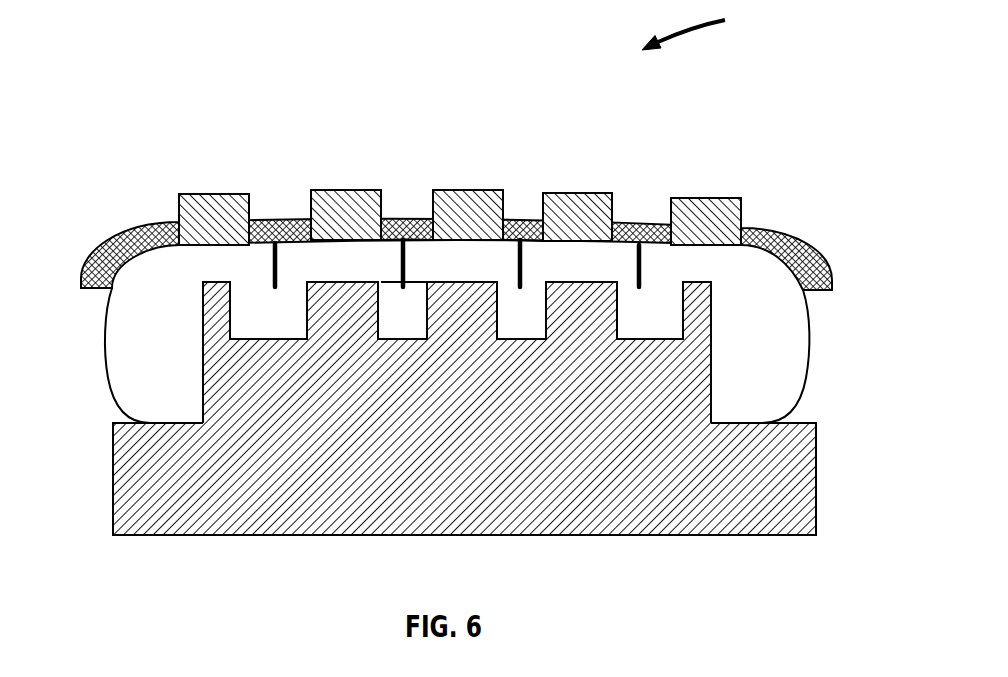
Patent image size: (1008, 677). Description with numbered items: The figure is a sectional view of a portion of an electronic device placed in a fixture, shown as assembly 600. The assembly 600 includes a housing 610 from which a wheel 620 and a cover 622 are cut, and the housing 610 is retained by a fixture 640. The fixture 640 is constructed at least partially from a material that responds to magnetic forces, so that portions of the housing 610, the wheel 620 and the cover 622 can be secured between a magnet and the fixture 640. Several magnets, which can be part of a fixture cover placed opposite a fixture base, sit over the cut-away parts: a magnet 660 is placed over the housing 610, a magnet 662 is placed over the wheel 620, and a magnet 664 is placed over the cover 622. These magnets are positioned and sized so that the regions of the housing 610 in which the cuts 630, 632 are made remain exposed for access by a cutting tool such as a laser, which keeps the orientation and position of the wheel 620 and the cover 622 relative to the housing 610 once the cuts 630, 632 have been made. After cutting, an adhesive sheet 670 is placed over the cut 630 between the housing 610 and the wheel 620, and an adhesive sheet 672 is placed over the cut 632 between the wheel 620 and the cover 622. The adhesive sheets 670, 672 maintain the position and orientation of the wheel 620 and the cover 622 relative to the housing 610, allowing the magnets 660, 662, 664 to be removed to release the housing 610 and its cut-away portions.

The assembly 600 is at (711, 28).
The housing 610 is at (115, 368).
The wheel 620 is at (303, 265).
The cover 622 is at (426, 260).
The cut 630 is at (275, 243).
The cut 632 is at (413, 229).
The fixture 640 is at (810, 455).
The magnet 660 is at (192, 197).
The magnet 662 is at (322, 203).
The magnet 664 is at (447, 207).
The adhesive sheet 670 is at (284, 229).
The adhesive sheet 672 is at (403, 240).